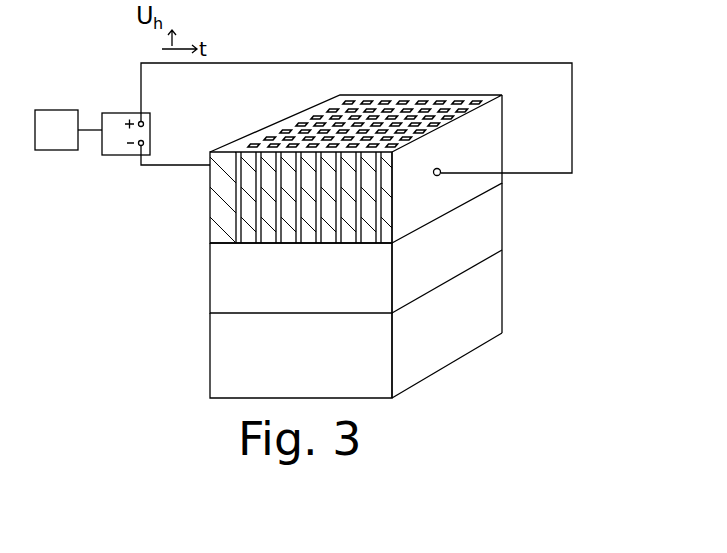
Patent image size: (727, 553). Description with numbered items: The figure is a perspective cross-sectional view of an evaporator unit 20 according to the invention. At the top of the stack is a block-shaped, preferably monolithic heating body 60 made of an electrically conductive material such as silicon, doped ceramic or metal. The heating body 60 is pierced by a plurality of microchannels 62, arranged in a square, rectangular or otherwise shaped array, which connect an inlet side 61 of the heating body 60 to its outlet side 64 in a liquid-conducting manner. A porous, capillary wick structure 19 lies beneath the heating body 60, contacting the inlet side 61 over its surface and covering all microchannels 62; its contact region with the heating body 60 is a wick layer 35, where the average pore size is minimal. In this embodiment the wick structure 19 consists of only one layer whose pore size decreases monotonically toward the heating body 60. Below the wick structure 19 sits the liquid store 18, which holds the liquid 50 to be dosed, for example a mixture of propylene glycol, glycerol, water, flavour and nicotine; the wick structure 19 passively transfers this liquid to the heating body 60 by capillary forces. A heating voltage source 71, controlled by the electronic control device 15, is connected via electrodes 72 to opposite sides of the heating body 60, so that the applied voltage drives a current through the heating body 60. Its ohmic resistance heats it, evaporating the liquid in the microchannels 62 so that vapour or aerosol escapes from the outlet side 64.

The electronic control device 15 is at (72, 146).
The heating voltage source 71 is at (126, 113).
The heating body 60 is at (204, 176).
The microchannels 62 is at (243, 198).
The outlet side 64 is at (292, 125).
The wick layer 35 is at (503, 185).
The electrodes 72 is at (439, 169).
The inlet side 61 is at (327, 243).
The wick structure 19 is at (190, 243).
The liquid 50 is at (302, 378).
The liquid store 18 is at (503, 288).
The evaporator unit 20 is at (518, 230).